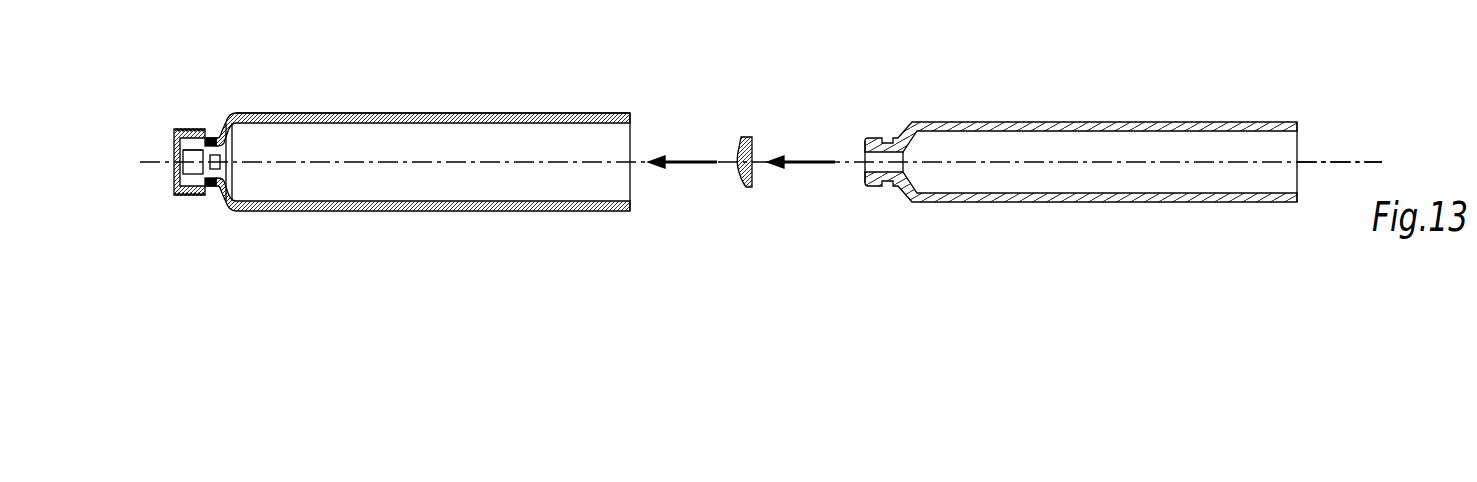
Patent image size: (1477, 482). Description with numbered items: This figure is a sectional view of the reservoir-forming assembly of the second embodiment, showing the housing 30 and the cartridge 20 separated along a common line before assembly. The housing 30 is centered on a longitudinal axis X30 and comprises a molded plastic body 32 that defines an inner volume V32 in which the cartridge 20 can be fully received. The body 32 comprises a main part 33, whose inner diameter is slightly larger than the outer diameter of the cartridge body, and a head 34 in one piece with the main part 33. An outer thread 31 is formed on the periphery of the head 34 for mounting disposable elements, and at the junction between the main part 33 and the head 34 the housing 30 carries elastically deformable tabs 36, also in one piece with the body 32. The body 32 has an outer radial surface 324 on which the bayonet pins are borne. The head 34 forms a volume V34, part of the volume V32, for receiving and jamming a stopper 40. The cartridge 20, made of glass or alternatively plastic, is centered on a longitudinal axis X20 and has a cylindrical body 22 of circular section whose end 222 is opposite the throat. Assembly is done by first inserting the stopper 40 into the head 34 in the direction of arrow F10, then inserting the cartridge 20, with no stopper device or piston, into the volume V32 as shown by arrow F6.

The cartridge 20 is at (1143, 118).
The cylindrical body 22 is at (1095, 215).
The end of the body 222 is at (1297, 150).
The housing 30 is at (740, 146).
The outer thread 31 is at (175, 128).
The body 32 is at (417, 146).
The main part 33 is at (370, 204).
The head 34 is at (204, 196).
The elastically deformable tabs 36 is at (209, 136).
The outer radial surface 324 is at (418, 112).
The stopper 40 is at (745, 188).
The inner volume V32 is at (346, 143).
The volume for receiving and jamming the stopper V34 is at (190, 186).
The longitudinal axis X30 is at (740, 148).
The longitudinal axis X20 is at (1359, 162).
The arrows F10 is at (683, 151).
The arrows F6 is at (801, 151).